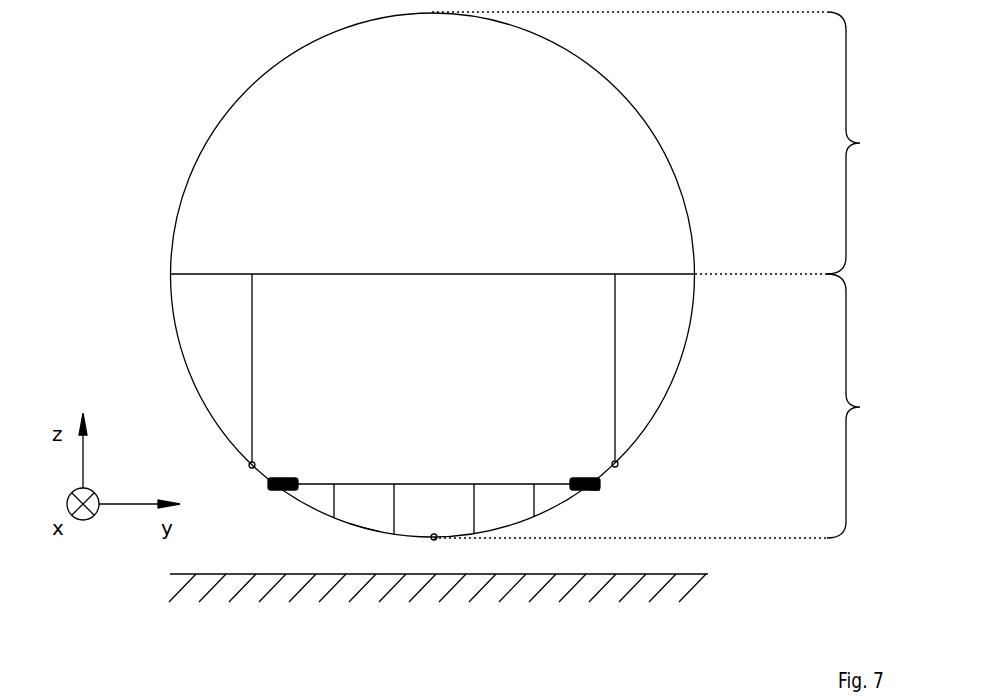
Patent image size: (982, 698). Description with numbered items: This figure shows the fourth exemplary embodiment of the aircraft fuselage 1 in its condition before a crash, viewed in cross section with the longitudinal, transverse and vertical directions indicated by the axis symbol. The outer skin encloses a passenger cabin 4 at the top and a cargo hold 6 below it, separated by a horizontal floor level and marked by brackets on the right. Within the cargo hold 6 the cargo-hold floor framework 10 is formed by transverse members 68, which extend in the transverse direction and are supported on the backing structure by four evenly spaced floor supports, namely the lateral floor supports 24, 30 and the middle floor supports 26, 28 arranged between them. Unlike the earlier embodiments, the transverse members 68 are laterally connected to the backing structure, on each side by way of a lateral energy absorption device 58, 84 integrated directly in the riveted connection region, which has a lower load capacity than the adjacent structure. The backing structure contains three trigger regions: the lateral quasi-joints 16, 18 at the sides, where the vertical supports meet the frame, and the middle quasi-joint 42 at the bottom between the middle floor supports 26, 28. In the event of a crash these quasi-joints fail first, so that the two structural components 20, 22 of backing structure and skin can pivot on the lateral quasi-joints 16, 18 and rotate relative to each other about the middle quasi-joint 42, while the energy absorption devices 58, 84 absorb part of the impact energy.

The aircraft fuselage 1 is at (53, 16).
The passenger cabin 4 is at (659, 143).
The cargo hold 6 is at (660, 406).
The cargo-hold floor framework 10 is at (560, 456).
The lateral quasi-joint 16 is at (250, 468).
The lateral quasi-joint 18 is at (617, 467).
The structural component 20 is at (363, 530).
The structural component 22 is at (534, 505).
The lateral floor support 24 is at (334, 497).
The middle floor support 26 is at (394, 507).
The middle floor support 28 is at (474, 507).
The lateral floor support 30 is at (587, 491).
The middle quasi-joint 42 is at (433, 540).
The lateral energy absorption device 58 is at (282, 491).
The transverse member 68 is at (490, 483).
The lateral energy absorption device 84 is at (600, 491).